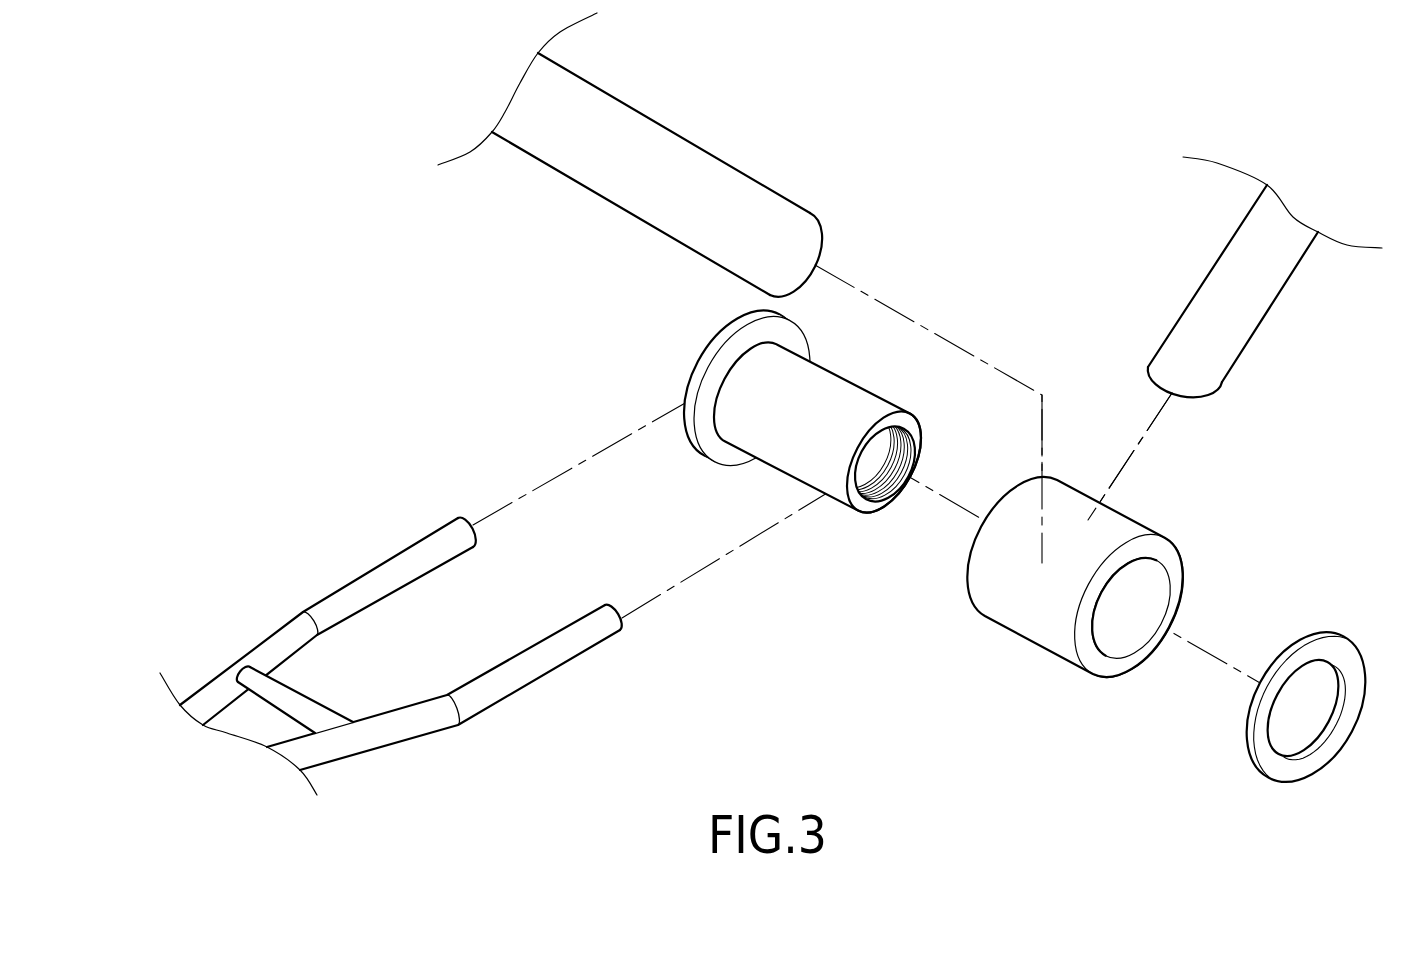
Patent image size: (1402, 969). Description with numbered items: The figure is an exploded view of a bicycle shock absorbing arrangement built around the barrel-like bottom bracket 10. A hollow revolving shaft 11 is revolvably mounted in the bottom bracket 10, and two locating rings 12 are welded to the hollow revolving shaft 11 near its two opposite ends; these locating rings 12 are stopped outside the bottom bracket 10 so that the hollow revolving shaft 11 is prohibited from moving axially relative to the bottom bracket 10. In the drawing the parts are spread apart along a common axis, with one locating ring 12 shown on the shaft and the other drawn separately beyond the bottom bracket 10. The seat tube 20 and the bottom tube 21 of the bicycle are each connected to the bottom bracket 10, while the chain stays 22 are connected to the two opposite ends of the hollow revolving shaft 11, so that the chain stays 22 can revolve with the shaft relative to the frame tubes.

The bottom bracket 10 is at (1040, 600).
The hollow revolving shaft 11 is at (830, 405).
The locating rings 12 is at (698, 420).
The seat tube 20 is at (683, 193).
The bottom tube 21 is at (1233, 293).
The chain stays 22 is at (400, 570).